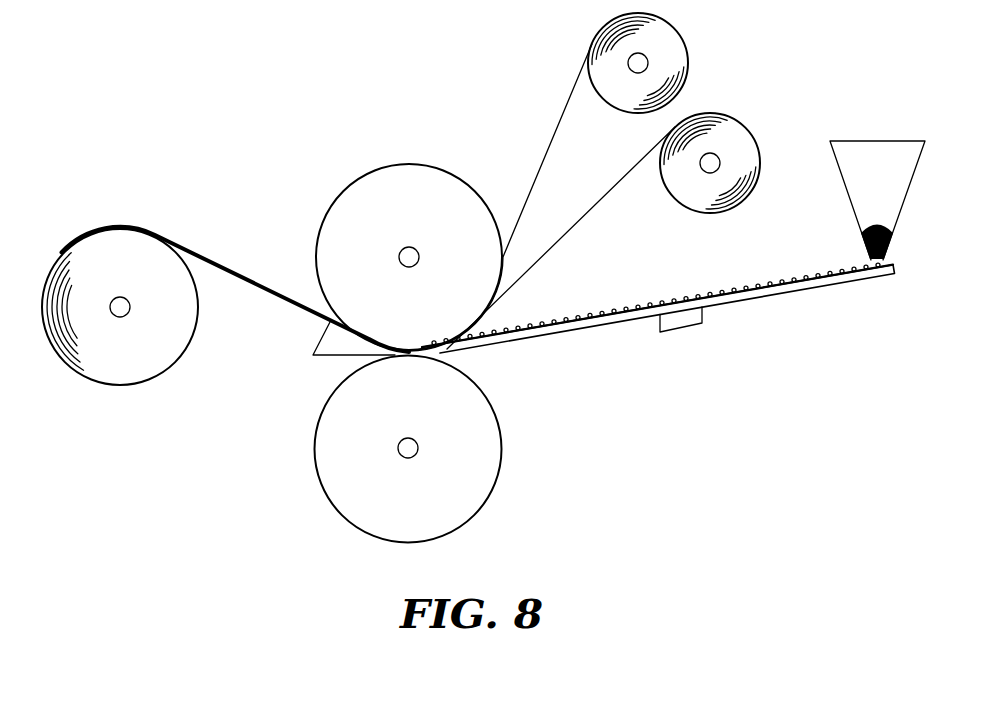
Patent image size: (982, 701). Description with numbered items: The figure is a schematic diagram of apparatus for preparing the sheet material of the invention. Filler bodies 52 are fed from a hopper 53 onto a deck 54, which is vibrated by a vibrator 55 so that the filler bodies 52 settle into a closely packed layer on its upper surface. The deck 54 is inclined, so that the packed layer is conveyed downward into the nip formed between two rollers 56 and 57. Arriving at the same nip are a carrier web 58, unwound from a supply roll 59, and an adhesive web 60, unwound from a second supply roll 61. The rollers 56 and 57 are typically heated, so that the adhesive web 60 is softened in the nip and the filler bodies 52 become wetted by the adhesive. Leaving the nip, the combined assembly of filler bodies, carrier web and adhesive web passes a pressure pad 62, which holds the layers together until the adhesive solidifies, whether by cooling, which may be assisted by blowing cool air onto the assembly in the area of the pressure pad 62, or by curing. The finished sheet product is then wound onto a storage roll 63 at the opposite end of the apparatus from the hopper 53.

The filler bodies 52 is at (762, 286).
The hopper 53 is at (843, 185).
The deck 54 is at (775, 287).
The vibrator 55 is at (678, 329).
The roller 56 is at (433, 180).
The roller 57 is at (480, 492).
The carrier web 58 is at (550, 155).
The supply roll 59 is at (680, 38).
The adhesive web 60 is at (580, 222).
The supply roll 61 is at (735, 122).
The pressure pad 62 is at (322, 328).
The storage roll 63 is at (148, 367).